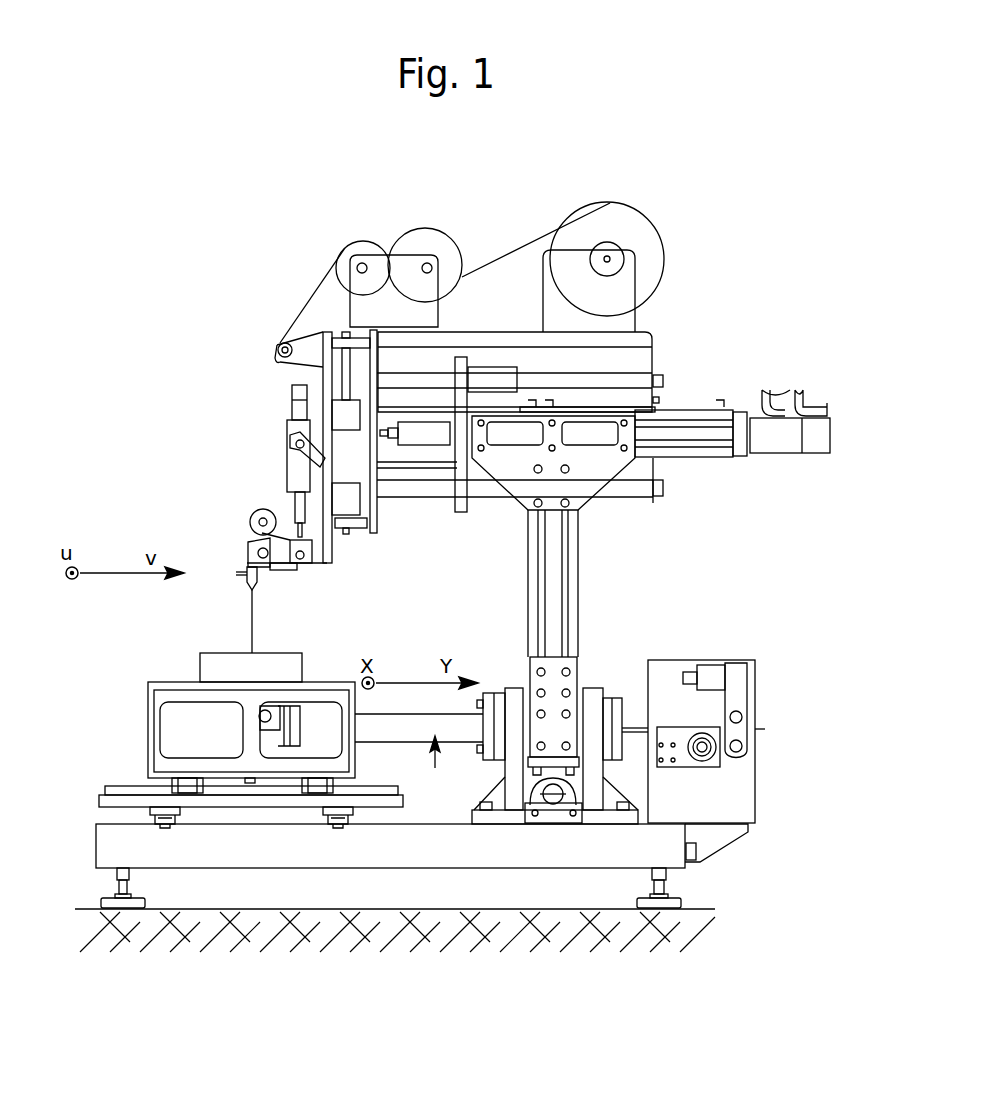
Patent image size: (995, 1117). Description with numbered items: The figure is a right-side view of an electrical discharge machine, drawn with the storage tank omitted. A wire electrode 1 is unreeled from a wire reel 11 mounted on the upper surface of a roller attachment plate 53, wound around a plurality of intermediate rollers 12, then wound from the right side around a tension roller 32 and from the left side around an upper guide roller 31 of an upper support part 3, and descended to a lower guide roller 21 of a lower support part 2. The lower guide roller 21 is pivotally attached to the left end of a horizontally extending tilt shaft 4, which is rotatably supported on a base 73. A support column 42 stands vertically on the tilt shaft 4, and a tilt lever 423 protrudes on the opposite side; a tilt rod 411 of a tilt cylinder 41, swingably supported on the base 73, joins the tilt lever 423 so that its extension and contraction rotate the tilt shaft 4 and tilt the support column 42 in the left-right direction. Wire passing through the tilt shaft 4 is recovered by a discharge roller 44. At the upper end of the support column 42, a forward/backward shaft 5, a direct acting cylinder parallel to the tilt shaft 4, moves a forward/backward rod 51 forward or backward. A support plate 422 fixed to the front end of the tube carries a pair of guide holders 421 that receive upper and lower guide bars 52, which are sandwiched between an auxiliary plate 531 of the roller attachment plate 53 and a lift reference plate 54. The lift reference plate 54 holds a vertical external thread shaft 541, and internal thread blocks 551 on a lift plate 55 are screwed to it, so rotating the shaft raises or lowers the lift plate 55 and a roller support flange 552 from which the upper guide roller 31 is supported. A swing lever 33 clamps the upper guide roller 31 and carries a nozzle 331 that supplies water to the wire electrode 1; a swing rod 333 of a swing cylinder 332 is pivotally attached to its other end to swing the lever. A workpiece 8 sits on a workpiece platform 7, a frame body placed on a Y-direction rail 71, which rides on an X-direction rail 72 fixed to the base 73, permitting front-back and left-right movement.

The wire electrode 1 is at (300, 305).
The wire reel 11 is at (627, 222).
The intermediate roller 12 is at (358, 243).
The lower support part 2 is at (258, 720).
The lower guide roller 21 is at (335, 713).
The upper support part 3 is at (258, 547).
The upper guide roller 31 is at (282, 570).
The tension roller 32 is at (258, 515).
The swing lever 33 is at (245, 553).
The nozzle 331 is at (240, 578).
The swing cylinder 332 is at (295, 430).
The swing rod 333 is at (312, 548).
The tilt shaft 4 is at (433, 769).
The tilt cylinder 41 is at (590, 806).
The tilt rod 411 is at (553, 806).
The support column 42 is at (575, 580).
The guide holder 421 is at (494, 370).
The support plate 422 is at (505, 382).
The tilt lever 423 is at (510, 805).
The discharge roller 44 is at (748, 753).
The forward/backward shaft 5 is at (700, 437).
The forward/backward rod 51 is at (418, 432).
The guide bar 52 is at (415, 377).
The roller attachment plate 53 is at (583, 340).
The auxiliary plate 531 is at (665, 356).
The lift reference plate 54 is at (378, 465).
The external thread shaft 541 is at (345, 470).
The lift plate 55 is at (335, 540).
The internal thread block 551 is at (335, 415).
The roller support flange 552 is at (313, 562).
The workpiece platform 7 is at (148, 694).
The Y-direction rail 71 is at (112, 792).
The X-direction rail 72 is at (170, 826).
The base 73 is at (390, 852).
The workpiece 8 is at (205, 663).